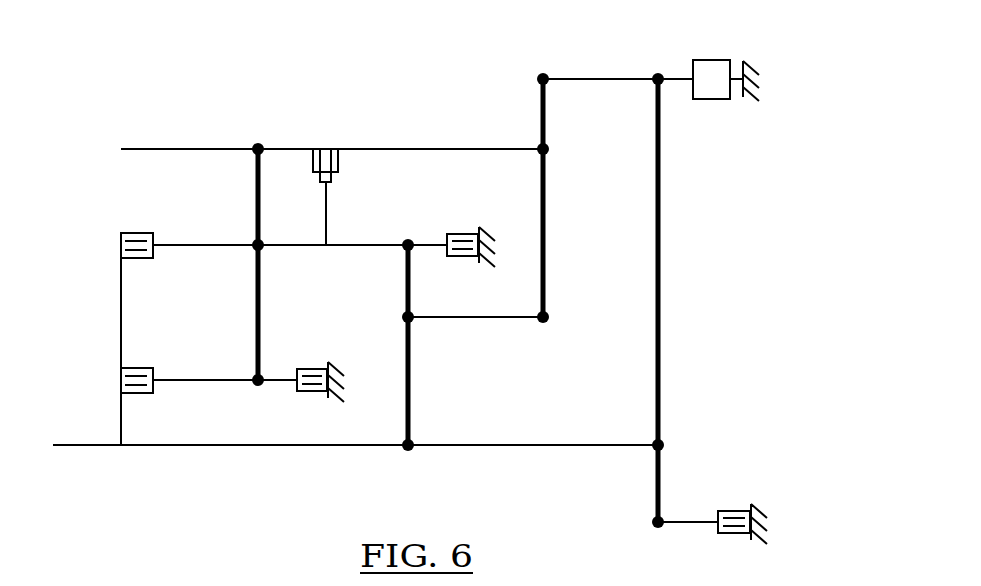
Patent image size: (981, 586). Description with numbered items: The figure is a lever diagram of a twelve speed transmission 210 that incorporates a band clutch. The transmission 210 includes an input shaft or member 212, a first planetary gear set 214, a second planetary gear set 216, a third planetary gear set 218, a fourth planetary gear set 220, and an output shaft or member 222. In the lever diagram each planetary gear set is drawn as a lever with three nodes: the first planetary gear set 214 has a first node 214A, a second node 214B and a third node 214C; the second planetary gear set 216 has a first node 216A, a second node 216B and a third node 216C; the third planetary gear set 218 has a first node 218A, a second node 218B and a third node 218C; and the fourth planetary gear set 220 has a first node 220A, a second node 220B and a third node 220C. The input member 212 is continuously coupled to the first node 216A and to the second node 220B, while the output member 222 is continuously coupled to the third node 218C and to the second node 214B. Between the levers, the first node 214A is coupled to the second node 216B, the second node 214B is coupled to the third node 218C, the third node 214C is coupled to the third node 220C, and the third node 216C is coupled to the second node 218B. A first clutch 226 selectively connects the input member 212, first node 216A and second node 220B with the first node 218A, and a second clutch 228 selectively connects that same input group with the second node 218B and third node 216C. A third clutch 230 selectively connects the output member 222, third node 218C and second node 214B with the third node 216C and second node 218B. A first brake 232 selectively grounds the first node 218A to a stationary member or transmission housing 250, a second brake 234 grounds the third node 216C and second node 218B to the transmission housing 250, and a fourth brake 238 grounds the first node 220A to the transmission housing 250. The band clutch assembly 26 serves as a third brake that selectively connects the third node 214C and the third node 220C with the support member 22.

The transmission 210 is at (750, 206).
The input shaft or member 212 is at (80, 447).
The first planetary gear set 214 is at (522, 118).
The first node 214A is at (542, 321).
The second node 214B is at (546, 151).
The third node 214C is at (543, 73).
The second planetary gear set 216 is at (437, 400).
The first node 216A is at (408, 449).
The second node 216B is at (407, 315).
The third node 216C is at (407, 243).
The third planetary gear set 218 is at (285, 122).
The first node 218A is at (258, 384).
The second node 218B is at (256, 250).
The third node 218C is at (257, 146).
The fourth planetary gear set 220 is at (630, 106).
The first node 220A is at (656, 521).
The second node 220B is at (662, 444).
The third node 220C is at (659, 73).
The output shaft or member 222 is at (162, 150).
The first clutch 226 is at (140, 367).
The second clutch 228 is at (140, 233).
The third clutch 230 is at (340, 162).
The first brake 232 is at (310, 395).
The second brake 234 is at (457, 236).
The fourth brake 238 is at (735, 512).
The stationary member or transmission housing 250 is at (484, 232).
The band clutch assembly 26 is at (718, 60).
The support member 22 is at (752, 66).